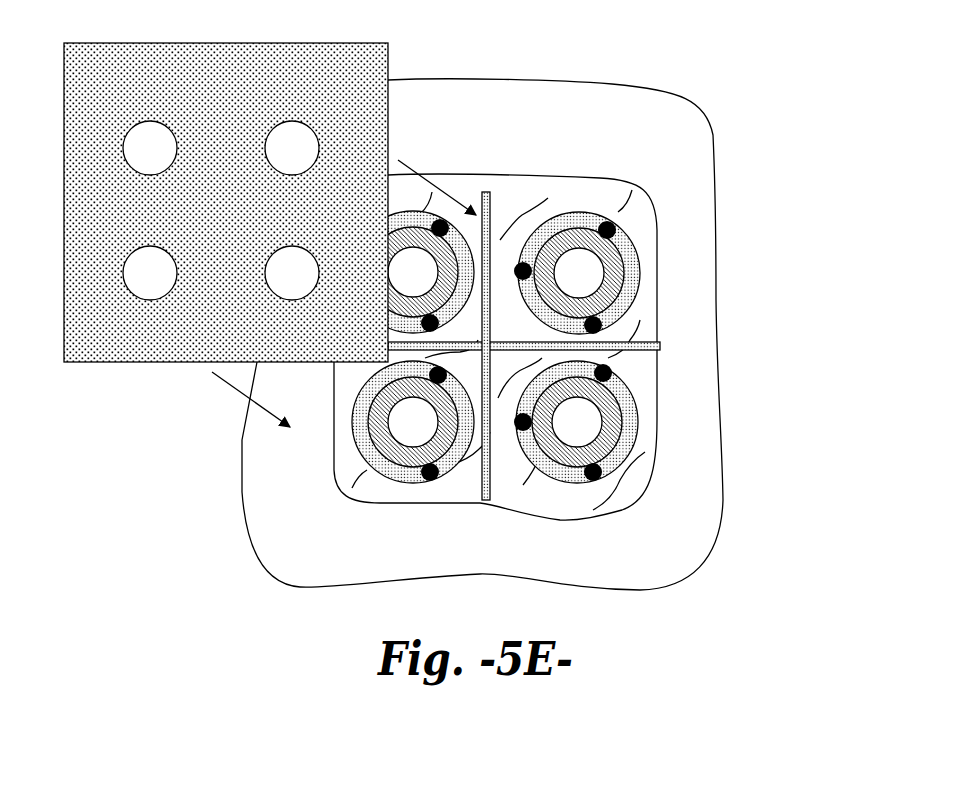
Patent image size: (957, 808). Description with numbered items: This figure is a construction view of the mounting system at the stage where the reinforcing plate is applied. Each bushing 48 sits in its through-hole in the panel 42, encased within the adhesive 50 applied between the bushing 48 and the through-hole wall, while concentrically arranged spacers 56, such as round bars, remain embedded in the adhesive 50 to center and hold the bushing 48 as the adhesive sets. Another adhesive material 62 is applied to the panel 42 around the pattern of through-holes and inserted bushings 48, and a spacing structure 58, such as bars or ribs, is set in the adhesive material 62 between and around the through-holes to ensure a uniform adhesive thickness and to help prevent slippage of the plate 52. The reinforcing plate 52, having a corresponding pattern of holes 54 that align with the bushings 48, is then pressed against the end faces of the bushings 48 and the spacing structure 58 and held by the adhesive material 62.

The panel 42 is at (698, 533).
The bushing 48 is at (610, 236).
The adhesive 50 is at (579, 236).
The plate 52 is at (376, 213).
The hole 54 is at (160, 155).
The spacer 56 is at (430, 478).
The spacing structure 58 is at (481, 192).
The adhesive material 62 is at (524, 347).